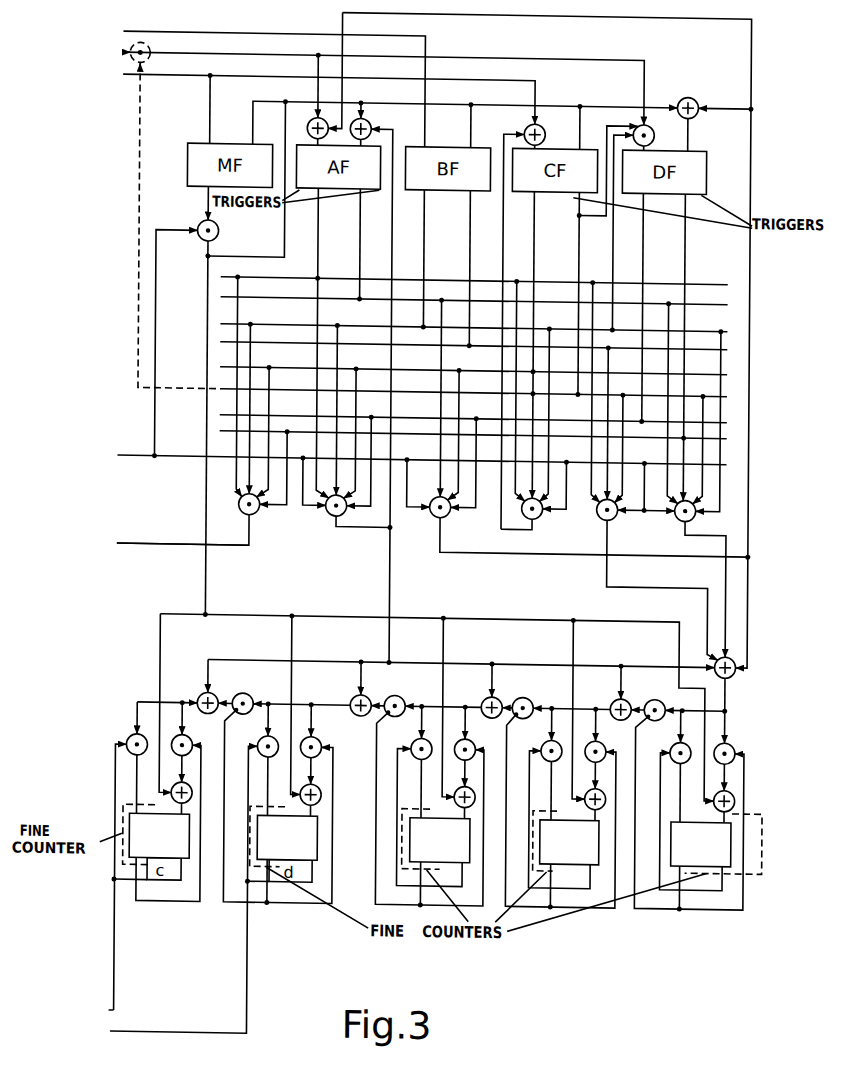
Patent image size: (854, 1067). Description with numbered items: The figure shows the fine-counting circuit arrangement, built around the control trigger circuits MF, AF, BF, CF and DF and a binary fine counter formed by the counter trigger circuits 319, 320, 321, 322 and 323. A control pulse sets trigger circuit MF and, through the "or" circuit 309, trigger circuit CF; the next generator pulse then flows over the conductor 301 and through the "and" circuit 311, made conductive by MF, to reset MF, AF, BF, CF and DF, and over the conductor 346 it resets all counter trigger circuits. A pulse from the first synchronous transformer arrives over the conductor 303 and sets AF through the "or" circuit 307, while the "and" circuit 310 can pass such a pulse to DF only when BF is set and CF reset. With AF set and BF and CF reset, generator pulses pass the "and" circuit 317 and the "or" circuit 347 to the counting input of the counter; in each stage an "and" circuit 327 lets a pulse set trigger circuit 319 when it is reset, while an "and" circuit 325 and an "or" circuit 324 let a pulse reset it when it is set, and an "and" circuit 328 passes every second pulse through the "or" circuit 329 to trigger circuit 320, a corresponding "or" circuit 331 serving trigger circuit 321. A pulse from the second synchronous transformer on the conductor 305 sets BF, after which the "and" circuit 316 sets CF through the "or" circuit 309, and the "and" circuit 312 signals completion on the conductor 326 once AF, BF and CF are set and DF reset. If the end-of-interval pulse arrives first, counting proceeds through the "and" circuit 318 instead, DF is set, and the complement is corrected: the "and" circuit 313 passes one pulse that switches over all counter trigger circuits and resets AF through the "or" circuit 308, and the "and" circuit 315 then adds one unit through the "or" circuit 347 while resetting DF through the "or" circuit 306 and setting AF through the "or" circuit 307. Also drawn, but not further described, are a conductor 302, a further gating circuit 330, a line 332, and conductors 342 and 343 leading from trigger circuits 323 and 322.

The conductor 301 is at (175, 344).
The input line 302 is at (243, 66).
The conductor 303 is at (243, 43).
The conductor 305 is at (243, 22).
The "or" circuit 306 is at (702, 101).
The "or" circuit 307 is at (306, 122).
The "or" circuit 308 is at (380, 122).
The "or" circuit 309 is at (553, 135).
The "and" circuit 310 is at (661, 136).
The "and" circuit 311 is at (226, 232).
The "and" circuit 312 is at (254, 512).
The "and" circuit 313 is at (334, 512).
The "and" circuit 315 is at (436, 512).
The "and" circuit 316 is at (537, 513).
The "and" circuit 317 is at (604, 513).
The "and" circuit 318 is at (693, 514).
The counter trigger circuit 319 is at (716, 843).
The counter trigger circuit 320 is at (566, 841).
The counter trigger circuit 321 is at (436, 839).
The counter trigger circuit 322 is at (284, 836).
The counter trigger circuit 323 is at (156, 834).
The "or" circuit 324 is at (718, 804).
The "and" circuit 325 is at (732, 741).
The conductor 326 is at (183, 556).
The "and" circuit 327 is at (674, 741).
The "and" circuit 328 is at (664, 695).
The "or" circuit 329 is at (613, 700).
The multiplier gate 330 is at (535, 694).
The "or" circuit 331 is at (484, 700).
The control line 332 is at (513, 649).
The input line to counter 323 342 is at (130, 877).
The input line to counter 322 343 is at (196, 889).
The conductor 346 is at (627, 606).
The "or" circuit 347 is at (731, 671).